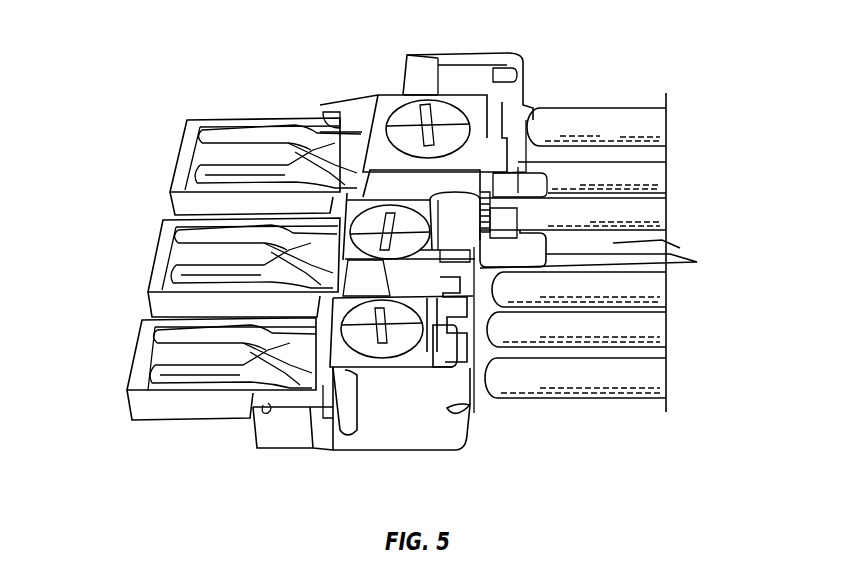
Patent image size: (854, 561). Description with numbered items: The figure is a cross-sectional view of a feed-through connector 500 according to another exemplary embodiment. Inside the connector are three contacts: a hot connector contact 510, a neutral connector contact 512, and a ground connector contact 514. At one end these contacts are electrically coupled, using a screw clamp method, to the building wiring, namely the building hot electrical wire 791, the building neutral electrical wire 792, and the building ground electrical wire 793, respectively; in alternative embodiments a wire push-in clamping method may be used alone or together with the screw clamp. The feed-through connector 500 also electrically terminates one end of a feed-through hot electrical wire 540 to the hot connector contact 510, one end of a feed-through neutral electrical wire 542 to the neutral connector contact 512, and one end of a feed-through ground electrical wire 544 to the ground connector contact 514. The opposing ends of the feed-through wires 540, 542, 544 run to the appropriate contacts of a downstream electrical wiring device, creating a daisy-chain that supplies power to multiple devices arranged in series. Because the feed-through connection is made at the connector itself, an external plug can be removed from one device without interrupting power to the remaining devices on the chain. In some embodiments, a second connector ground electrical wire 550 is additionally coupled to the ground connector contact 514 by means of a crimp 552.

The feed-through connector 500 is at (157, 29).
The hot connector contact 510 is at (354, 150).
The neutral connector contact 512 is at (296, 366).
The ground connector contact 514 is at (331, 265).
The feed-through hot electrical wire 540 is at (650, 121).
The feed-through neutral electrical wire 542 is at (648, 318).
The feed-through ground electrical wire 544 is at (630, 240).
The second connector ground electrical wire 550 is at (650, 207).
The crimp 552 is at (457, 222).
The building hot electrical wire 791 is at (650, 176).
The building neutral electrical wire 792 is at (648, 372).
The building ground electrical wire 793 is at (648, 278).